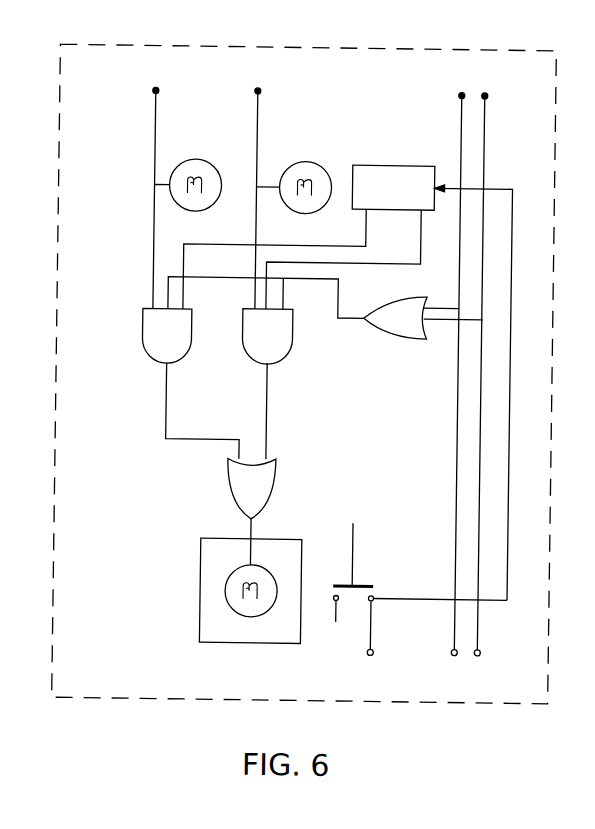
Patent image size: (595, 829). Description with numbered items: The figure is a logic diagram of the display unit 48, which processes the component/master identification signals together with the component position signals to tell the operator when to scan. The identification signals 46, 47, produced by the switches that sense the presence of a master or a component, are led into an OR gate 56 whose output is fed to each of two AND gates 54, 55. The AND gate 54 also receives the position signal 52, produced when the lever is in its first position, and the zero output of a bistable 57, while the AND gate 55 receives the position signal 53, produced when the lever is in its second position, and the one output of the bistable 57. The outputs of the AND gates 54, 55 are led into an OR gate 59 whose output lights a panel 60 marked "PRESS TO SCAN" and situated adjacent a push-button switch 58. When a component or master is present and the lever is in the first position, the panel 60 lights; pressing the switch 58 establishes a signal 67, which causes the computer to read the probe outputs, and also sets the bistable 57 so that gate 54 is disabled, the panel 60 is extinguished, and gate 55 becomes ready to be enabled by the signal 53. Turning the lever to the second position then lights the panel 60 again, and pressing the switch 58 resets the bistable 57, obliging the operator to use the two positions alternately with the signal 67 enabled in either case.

The signal 46 is at (457, 404).
The signal 47 is at (480, 432).
The display unit 48 is at (197, 702).
The signal 52 is at (153, 122).
The signal 53 is at (255, 122).
The AND gate 54 is at (150, 366).
The AND gate 55 is at (247, 366).
The OR gate 56 is at (404, 335).
The bistable 57 is at (377, 164).
The push-button switch 58 is at (356, 580).
The OR gate 59 is at (228, 491).
The panel 60 is at (202, 568).
The signal 67 is at (370, 636).